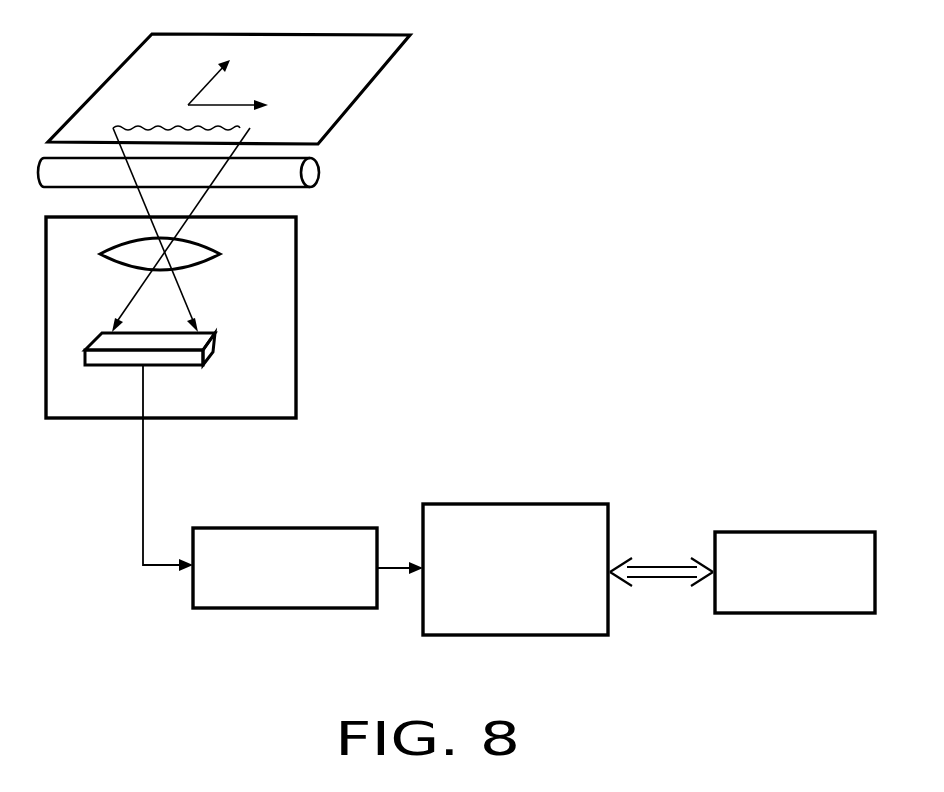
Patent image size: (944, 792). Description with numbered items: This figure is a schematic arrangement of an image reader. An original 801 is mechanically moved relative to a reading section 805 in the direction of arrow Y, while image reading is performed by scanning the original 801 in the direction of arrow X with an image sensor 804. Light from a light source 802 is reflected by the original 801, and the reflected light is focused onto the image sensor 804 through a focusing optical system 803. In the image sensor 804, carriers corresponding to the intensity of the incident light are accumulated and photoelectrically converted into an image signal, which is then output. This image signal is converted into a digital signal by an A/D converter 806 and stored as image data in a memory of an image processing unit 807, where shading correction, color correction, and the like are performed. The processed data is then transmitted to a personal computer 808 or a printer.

The original 801 is at (363, 98).
The light source 802 is at (319, 174).
The focusing optical system 803 is at (220, 254).
The image sensor 804 is at (215, 350).
The reading section 805 is at (296, 310).
The A/D converter 806 is at (297, 528).
The image processing unit 807 is at (535, 504).
The personal computer 808 is at (788, 532).